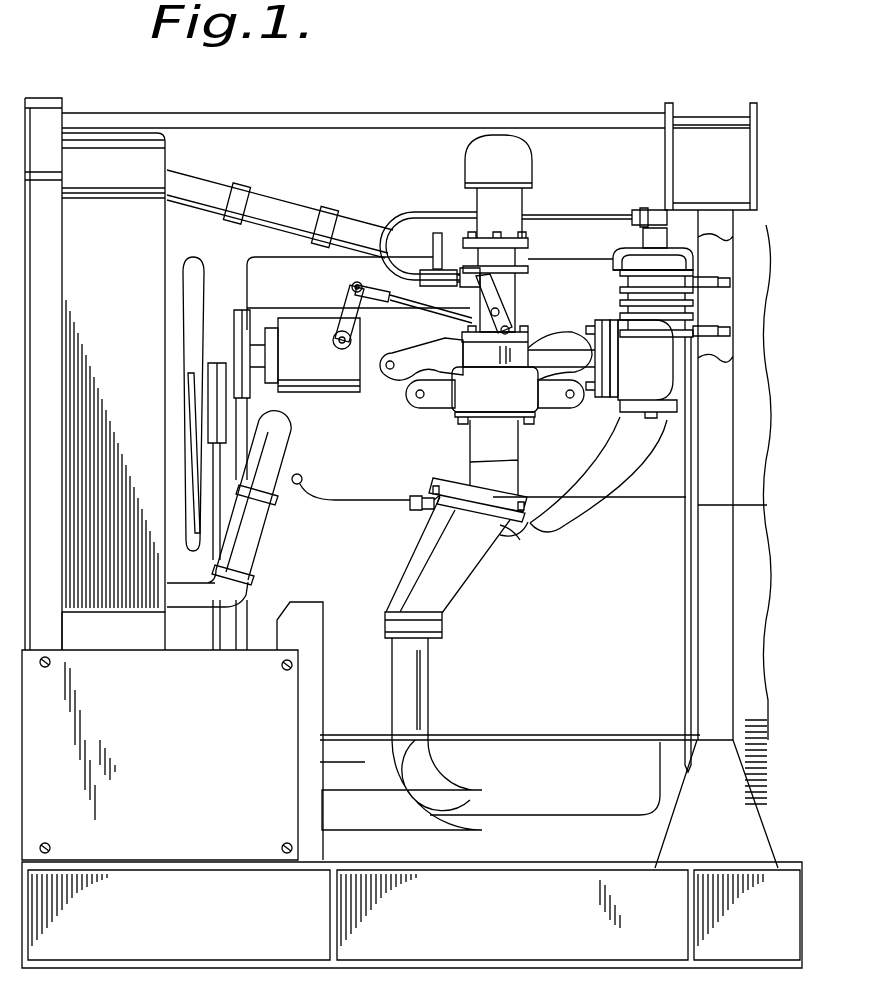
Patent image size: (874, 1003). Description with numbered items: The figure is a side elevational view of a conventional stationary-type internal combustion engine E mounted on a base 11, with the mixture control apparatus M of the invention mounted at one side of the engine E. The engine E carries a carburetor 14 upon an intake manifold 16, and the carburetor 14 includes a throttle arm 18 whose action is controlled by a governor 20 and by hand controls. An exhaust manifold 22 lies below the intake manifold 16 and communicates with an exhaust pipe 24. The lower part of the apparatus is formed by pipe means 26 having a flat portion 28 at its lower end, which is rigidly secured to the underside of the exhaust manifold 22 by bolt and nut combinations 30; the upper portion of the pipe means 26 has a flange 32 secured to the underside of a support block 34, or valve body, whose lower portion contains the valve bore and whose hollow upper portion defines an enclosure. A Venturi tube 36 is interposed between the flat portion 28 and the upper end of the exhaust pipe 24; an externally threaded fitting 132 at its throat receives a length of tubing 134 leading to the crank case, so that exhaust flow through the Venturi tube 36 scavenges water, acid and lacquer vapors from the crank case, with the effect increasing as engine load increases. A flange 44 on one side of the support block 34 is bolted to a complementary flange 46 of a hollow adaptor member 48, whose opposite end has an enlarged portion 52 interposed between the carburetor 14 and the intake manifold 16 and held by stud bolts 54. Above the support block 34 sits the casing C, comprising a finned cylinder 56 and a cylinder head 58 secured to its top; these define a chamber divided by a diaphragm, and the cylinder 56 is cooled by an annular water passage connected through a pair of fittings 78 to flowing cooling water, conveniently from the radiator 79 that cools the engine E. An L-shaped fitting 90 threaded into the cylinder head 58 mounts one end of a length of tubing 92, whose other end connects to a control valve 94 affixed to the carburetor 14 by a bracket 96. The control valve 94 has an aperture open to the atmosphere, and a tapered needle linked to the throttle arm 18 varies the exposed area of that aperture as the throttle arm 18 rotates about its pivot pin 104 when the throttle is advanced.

The base 11 is at (173, 948).
The carburetor 14 is at (530, 282).
The intake manifold 16 is at (443, 404).
The throttle arm 18 is at (460, 314).
The governor 20 is at (303, 327).
The exhaust manifold 22 is at (457, 450).
The exhaust pipe 24 is at (433, 688).
The pipe means 26 is at (632, 486).
The flat portion 28 is at (447, 470).
The bolt and nut combinations 30 is at (497, 537).
The flange 32 is at (675, 412).
The support block 34 is at (700, 358).
The Venturi tube 36 is at (458, 595).
The flange 44 is at (613, 414).
The complementary flange 46 is at (600, 398).
The adaptor member 48 is at (559, 343).
The enlarged portion 52 is at (487, 364).
The stud bolts 54 is at (410, 352).
The finned cylinder 56 is at (703, 310).
The cylinder head 58 is at (624, 244).
The fittings 78 is at (733, 282).
The radiator 79 is at (125, 142).
The L-shaped fitting 90 is at (657, 210).
The tubing 92 is at (567, 208).
The control valve 94 is at (420, 283).
The bracket 96 is at (435, 233).
The pivot pin 104 is at (507, 308).
The fitting 132 is at (430, 520).
The tubing 134 is at (343, 503).
The casing C is at (605, 275).
The mixture control apparatus M is at (708, 390).
The internal combustion engine E is at (699, 464).